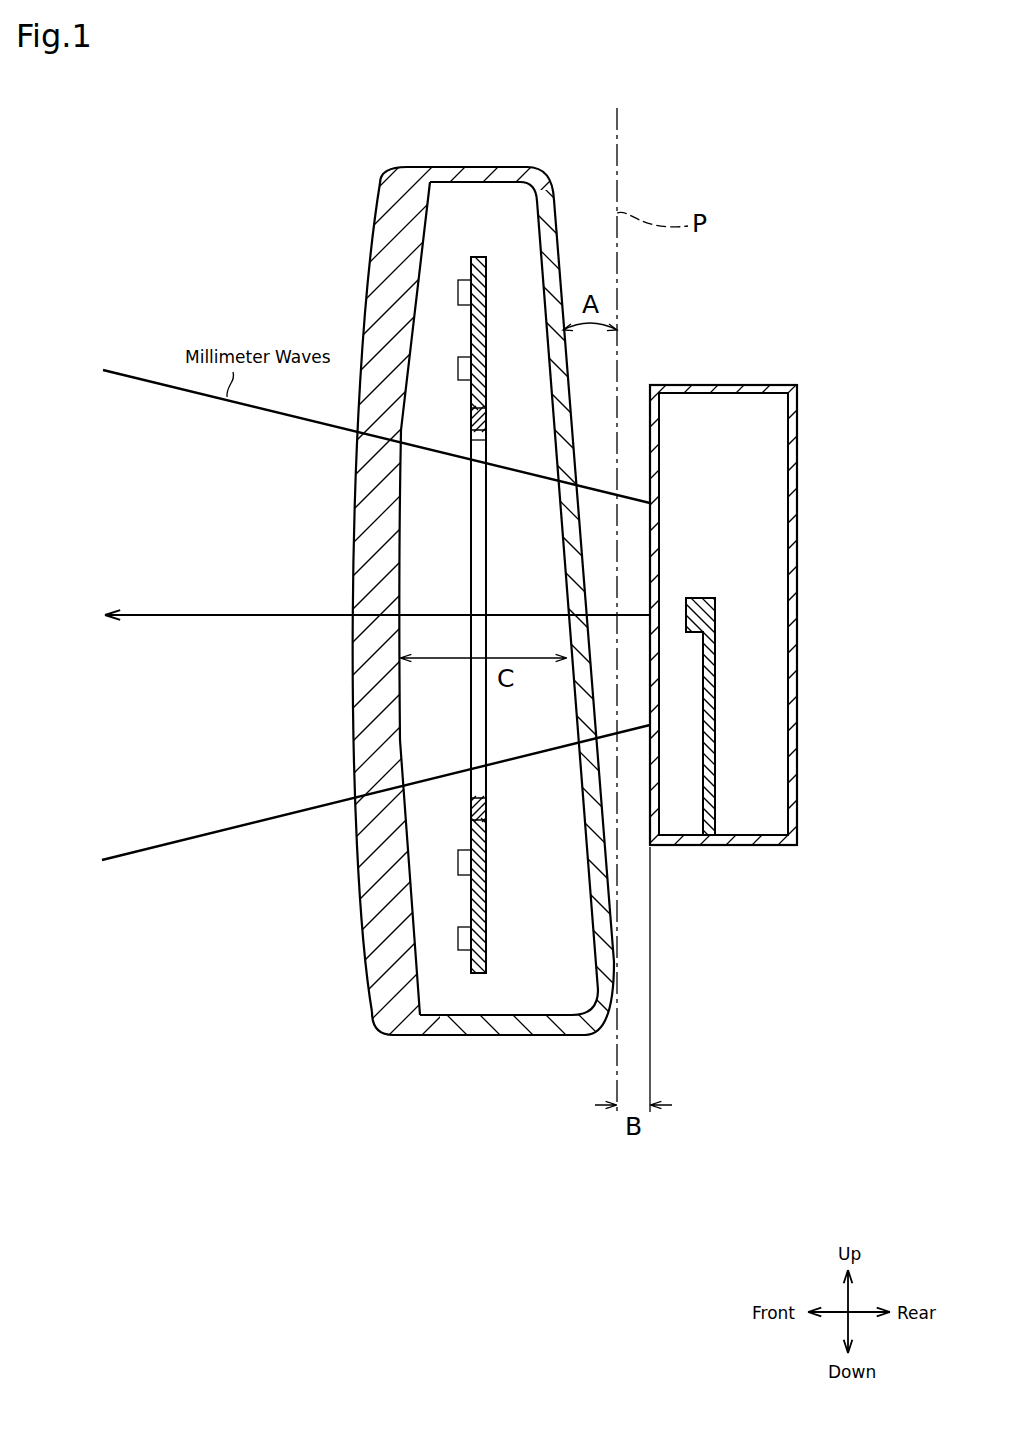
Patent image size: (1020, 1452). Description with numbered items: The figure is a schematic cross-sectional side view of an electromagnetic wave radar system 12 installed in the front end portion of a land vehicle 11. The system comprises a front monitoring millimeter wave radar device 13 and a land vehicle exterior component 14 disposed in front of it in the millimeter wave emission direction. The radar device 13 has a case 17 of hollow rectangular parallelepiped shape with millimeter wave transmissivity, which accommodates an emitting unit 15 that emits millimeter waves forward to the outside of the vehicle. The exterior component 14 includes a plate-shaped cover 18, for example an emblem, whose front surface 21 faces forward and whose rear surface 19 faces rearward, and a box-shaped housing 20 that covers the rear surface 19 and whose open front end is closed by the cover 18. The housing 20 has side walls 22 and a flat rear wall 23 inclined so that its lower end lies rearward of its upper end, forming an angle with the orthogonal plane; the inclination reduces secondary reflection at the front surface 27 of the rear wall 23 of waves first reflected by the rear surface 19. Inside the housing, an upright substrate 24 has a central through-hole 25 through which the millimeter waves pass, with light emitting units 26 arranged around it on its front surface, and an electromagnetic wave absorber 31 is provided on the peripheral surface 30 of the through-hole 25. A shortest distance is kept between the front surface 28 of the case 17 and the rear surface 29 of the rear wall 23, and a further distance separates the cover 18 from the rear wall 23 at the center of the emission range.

The land vehicle 11 is at (824, 184).
The electromagnetic wave radar system 12 is at (716, 184).
The millimeter wave radar device 13 is at (597, 612).
The land vehicle exterior component 14 is at (510, 600).
The emitting unit 15 is at (680, 608).
The case 17 is at (798, 515).
The cover 18 is at (360, 865).
The rear surface 19 is at (402, 733).
The housing 20 is at (487, 1037).
The front surface 21 is at (367, 282).
The side walls 22 is at (503, 198).
The rear wall 23 is at (553, 254).
The substrate 24 is at (488, 950).
The through-hole 25 is at (478, 562).
The light emitting units 26 is at (458, 292).
The front surface 27 is at (577, 843).
The front surface 28 is at (650, 440).
The rear surface 29 is at (563, 387).
The peripheral surface 30 is at (488, 418).
The electromagnetic wave absorber 31 is at (486, 445).